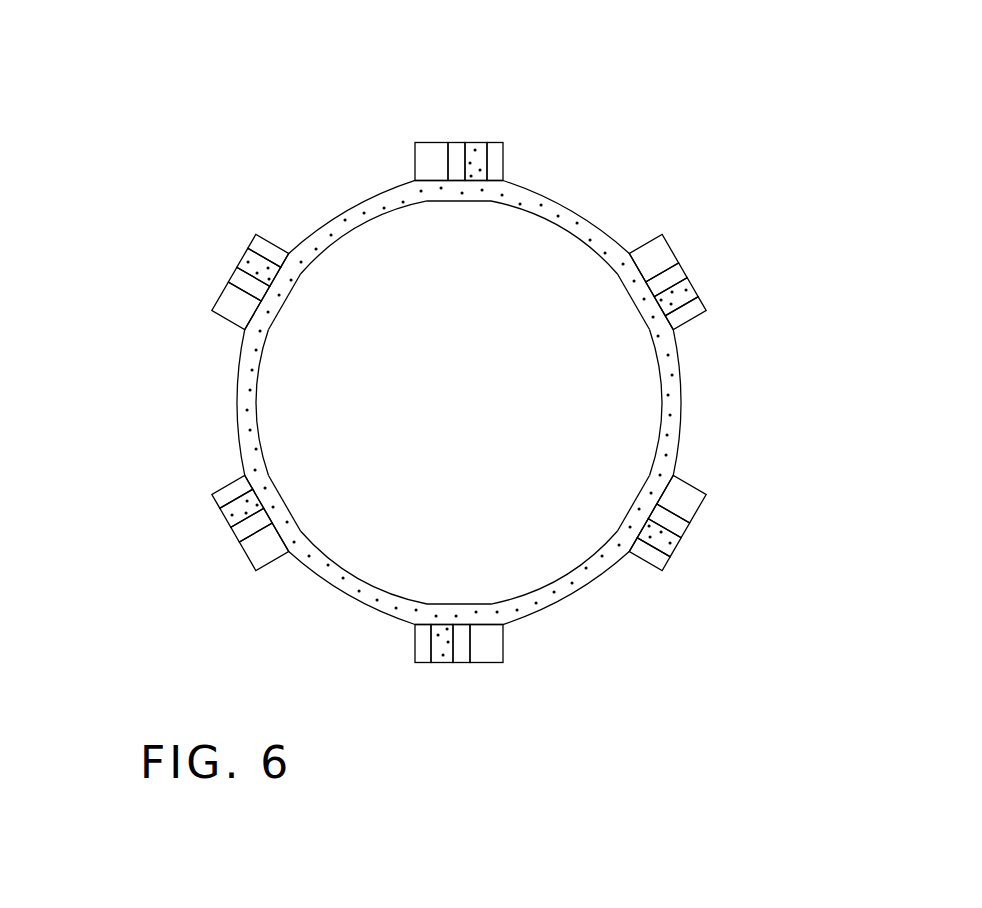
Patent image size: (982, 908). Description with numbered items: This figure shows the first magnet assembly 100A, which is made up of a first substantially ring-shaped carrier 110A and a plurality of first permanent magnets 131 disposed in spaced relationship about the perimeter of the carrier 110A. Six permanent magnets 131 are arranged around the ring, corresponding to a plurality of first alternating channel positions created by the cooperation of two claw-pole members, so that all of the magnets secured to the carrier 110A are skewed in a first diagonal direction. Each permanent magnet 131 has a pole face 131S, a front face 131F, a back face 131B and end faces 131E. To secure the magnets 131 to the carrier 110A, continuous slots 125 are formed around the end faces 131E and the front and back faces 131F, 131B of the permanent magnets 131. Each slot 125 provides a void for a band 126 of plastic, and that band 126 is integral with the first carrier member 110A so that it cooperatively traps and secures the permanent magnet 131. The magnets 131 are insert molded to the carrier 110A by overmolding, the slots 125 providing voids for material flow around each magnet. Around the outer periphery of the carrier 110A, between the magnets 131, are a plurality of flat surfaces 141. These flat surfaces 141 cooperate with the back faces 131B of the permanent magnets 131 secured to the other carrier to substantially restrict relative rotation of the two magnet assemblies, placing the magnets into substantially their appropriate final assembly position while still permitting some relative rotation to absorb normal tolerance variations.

The first magnet assembly 100A is at (669, 199).
The first substantially ring-shaped carrier 110A is at (345, 215).
The flat surfaces 141 is at (593, 217).
The permanent magnets 131 is at (645, 243).
The pole face 131S is at (423, 152).
The front face 131F is at (432, 140).
The band 126 is at (473, 150).
The end faces 131E is at (497, 150).
The back face 131B is at (427, 180).
The slots 125 is at (662, 292).